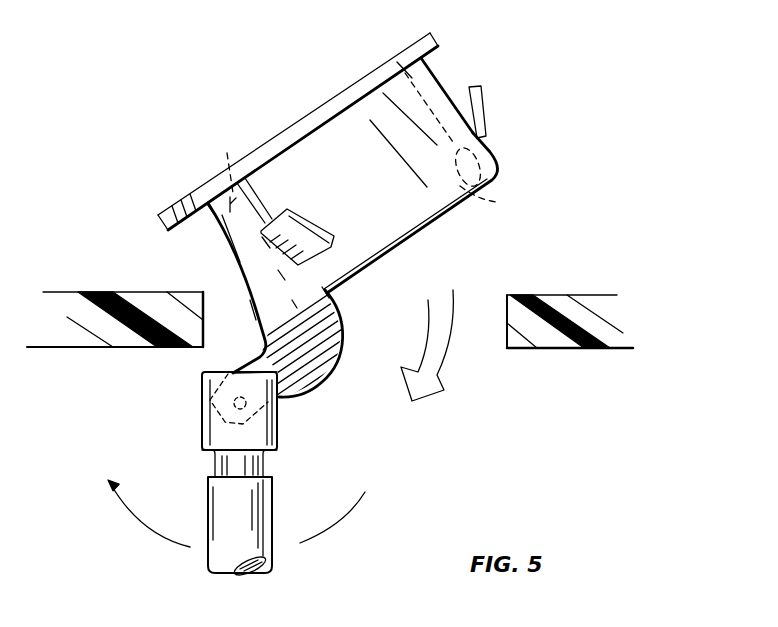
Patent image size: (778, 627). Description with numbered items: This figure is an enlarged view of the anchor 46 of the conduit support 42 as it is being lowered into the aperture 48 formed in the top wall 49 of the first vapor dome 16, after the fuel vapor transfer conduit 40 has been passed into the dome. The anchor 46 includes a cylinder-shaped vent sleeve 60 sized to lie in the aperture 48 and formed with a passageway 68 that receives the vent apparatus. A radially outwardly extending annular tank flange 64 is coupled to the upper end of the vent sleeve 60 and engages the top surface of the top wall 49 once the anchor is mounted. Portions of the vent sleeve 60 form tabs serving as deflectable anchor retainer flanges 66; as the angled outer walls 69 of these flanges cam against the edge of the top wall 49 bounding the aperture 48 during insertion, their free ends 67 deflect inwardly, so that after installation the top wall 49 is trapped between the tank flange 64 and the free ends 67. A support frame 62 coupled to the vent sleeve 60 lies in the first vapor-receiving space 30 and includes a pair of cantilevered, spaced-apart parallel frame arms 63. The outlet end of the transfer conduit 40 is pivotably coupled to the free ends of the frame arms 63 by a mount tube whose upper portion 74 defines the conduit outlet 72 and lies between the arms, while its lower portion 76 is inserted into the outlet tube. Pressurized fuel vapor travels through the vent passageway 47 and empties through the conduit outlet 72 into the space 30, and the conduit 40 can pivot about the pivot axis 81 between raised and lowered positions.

The first vapor dome 16 is at (587, 286).
The first vapor-receiving space 30 is at (498, 449).
The fuel vapor transfer conduit 40 is at (322, 485).
The conduit support 42 is at (472, 62).
The anchor 46 is at (600, 190).
The vent passageway 47 is at (250, 567).
The aperture 48 is at (506, 318).
The top wall 49 is at (138, 292).
The vent sleeve 60 is at (377, 227).
The support frame 62 is at (314, 387).
The frame arms 63 is at (330, 347).
The annular tank flange 64 is at (433, 45).
The anchor retainer flanges 66 is at (500, 107).
The free ends 67 is at (478, 87).
The passageway 68 is at (369, 149).
The angled outer walls 69 is at (487, 124).
The conduit outlet 72 is at (220, 360).
The upper portion 74 is at (204, 433).
The lower portion 76 is at (265, 465).
The pivot axis 81 is at (230, 405).